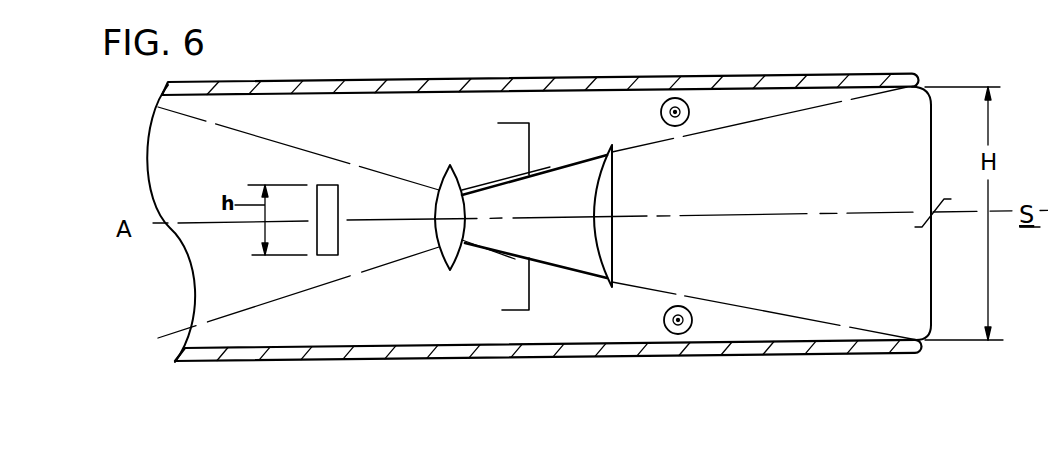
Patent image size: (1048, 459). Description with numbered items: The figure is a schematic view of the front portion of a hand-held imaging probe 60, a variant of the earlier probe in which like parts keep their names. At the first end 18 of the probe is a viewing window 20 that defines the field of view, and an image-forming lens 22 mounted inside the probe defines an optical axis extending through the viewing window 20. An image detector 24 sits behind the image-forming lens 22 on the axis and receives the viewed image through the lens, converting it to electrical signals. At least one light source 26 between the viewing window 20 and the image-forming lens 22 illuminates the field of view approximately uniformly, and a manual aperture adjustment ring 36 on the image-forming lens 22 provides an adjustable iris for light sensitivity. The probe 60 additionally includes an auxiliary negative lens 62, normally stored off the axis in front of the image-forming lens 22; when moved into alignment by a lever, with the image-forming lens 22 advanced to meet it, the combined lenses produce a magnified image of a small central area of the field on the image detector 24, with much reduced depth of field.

The hand-held probe 60 is at (548, 62).
The first end 18 is at (918, 350).
The viewing window 20 is at (932, 109).
The image-forming lens 22 is at (448, 263).
The image detector 24 is at (328, 184).
The light source 26 is at (659, 112).
The manual aperture adjustment ring 36 is at (514, 312).
The auxiliary negative lens 62 is at (613, 196).